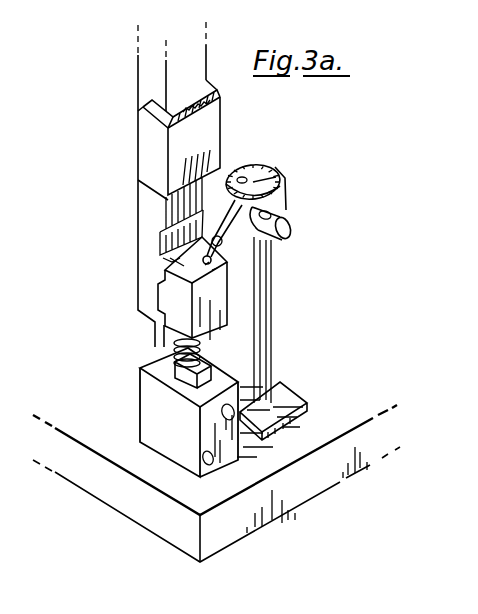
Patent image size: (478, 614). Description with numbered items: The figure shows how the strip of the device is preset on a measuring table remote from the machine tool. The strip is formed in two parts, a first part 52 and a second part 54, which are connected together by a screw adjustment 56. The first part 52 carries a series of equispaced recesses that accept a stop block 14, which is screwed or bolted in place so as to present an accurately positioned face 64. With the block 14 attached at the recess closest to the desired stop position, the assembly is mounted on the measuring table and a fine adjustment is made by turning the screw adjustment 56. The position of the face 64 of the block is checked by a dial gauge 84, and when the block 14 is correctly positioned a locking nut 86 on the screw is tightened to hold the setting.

The first part of strip 52 is at (148, 213).
The face 64 is at (170, 264).
The stop block 14 is at (175, 293).
The screw adjustment 56 is at (205, 352).
The locking nut 86 is at (207, 374).
The second part of strip 54 is at (189, 412).
The dial gauge 84 is at (257, 165).